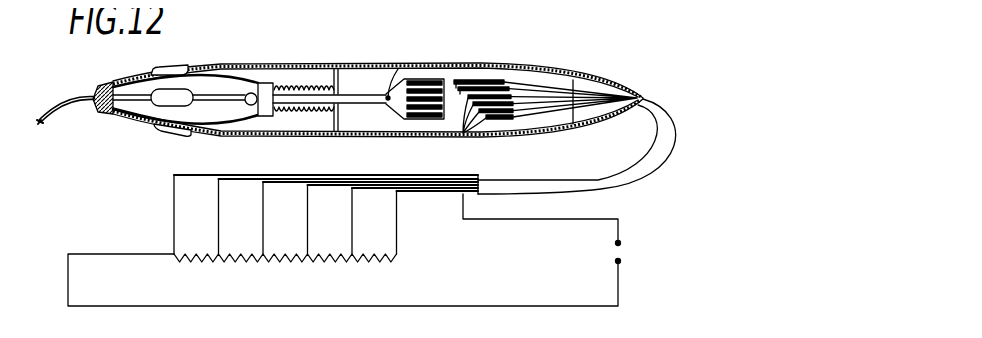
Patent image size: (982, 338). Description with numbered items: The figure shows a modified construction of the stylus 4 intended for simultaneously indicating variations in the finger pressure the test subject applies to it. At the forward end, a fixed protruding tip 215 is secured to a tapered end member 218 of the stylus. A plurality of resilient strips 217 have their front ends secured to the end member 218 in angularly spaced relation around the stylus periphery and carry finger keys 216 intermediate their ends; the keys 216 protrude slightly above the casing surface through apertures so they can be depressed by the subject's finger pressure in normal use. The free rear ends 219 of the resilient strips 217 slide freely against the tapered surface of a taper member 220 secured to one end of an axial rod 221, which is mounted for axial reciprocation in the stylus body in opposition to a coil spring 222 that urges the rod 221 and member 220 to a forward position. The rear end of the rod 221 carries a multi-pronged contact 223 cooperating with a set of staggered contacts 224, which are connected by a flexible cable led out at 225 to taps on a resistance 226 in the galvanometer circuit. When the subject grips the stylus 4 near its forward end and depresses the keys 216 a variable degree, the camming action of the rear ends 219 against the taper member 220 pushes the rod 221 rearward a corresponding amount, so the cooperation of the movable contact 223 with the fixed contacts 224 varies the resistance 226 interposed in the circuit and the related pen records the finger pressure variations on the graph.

The stylus 4 is at (497, 61).
The fixed protruding tip 215 is at (46, 123).
The finger keys 216 is at (170, 90).
The resilient strips 217 is at (210, 93).
The tapered end member 218 is at (99, 80).
The free rear ends 219 is at (251, 91).
The taper member 220 is at (269, 82).
The axial rod 221 is at (360, 103).
The coil spring 222 is at (310, 111).
The multi-pronged contact 223 is at (421, 82).
The staggered contacts 224 is at (461, 132).
The flexible cable outlet 225 is at (642, 93).
The resistance 226 is at (357, 250).